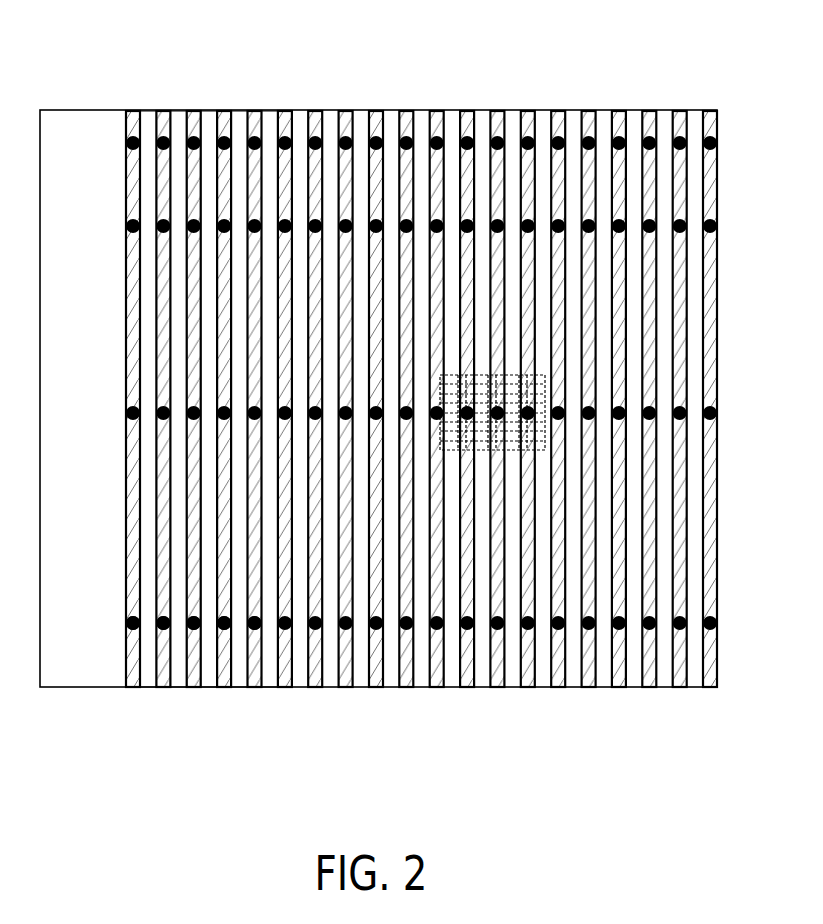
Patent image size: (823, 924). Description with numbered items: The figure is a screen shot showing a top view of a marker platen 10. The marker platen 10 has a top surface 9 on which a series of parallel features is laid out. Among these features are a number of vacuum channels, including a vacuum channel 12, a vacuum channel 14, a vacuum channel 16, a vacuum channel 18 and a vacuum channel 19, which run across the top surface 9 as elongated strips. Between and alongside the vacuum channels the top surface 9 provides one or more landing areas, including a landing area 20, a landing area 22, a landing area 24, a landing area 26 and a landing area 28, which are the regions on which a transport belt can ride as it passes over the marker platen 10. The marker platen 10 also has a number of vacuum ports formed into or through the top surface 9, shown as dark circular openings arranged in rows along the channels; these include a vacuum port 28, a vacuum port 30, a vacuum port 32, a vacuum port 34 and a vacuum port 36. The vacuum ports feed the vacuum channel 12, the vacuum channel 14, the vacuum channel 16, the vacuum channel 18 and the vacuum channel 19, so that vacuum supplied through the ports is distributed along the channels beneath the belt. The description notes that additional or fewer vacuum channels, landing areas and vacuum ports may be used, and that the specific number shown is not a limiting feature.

The marker platen 10 is at (62, 122).
The top surface 9 is at (105, 120).
The vacuum channel 12 is at (135, 353).
The vacuum channel 14 is at (167, 327).
The vacuum channel 16 is at (195, 302).
The vacuum channel 18 is at (223, 275).
The vacuum channel 19 is at (252, 250).
The landing area 20 is at (148, 553).
The landing area 22 is at (182, 527).
The landing area 24 is at (212, 502).
The landing area 26 is at (237, 477).
The landing area / vacuum port 28 is at (268, 452).
The vacuum port 30 is at (163, 629).
The vacuum port 32 is at (194, 629).
The vacuum port 34 is at (224, 629).
The vacuum port 36 is at (254, 629).